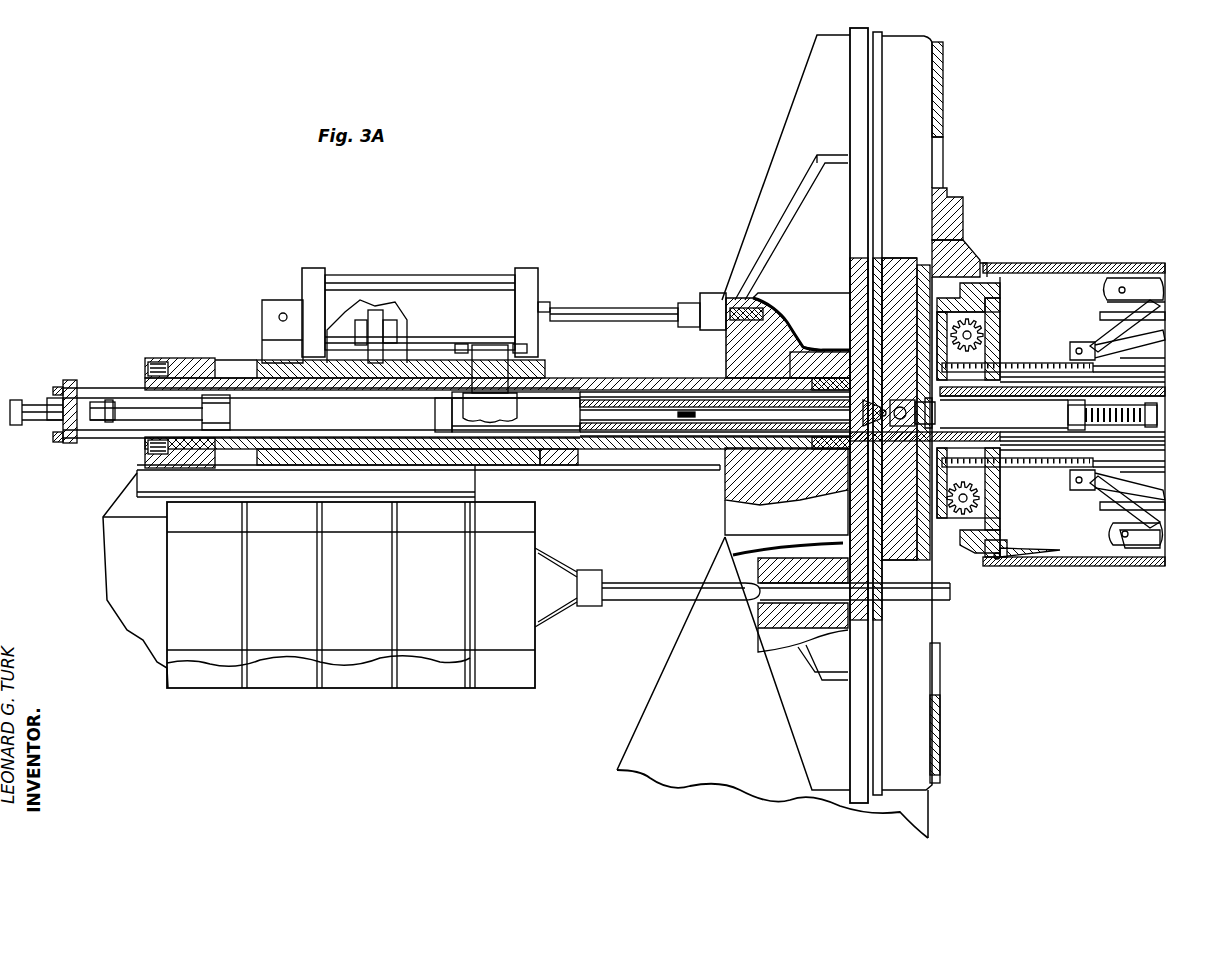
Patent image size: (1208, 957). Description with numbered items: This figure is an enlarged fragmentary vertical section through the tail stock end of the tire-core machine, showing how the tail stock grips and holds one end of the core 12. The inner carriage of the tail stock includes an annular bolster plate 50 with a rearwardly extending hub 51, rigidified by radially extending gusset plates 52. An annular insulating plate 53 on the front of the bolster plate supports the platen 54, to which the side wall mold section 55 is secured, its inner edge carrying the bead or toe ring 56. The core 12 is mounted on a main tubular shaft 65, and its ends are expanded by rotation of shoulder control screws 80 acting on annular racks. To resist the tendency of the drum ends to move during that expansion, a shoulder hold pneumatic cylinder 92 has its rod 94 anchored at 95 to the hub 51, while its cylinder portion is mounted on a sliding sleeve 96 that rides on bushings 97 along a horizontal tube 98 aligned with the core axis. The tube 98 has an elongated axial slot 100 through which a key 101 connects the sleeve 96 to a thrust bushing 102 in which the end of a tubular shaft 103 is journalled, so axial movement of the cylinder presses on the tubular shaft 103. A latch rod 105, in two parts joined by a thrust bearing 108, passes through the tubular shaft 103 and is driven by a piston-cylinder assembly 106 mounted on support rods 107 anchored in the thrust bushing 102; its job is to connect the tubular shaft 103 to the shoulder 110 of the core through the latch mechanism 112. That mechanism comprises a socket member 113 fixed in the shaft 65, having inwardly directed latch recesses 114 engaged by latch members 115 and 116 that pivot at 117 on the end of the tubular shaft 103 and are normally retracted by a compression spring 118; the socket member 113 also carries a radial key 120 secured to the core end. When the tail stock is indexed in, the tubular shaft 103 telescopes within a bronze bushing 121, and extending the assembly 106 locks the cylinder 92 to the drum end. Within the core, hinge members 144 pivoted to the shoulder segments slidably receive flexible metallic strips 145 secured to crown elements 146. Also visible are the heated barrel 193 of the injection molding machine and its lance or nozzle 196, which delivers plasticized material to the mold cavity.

The core 12 is at (1082, 570).
The bolster plate 50 is at (858, 92).
The hub 51 is at (733, 348).
The gusset plates 52 is at (792, 133).
The insulating plate 53 is at (880, 97).
The platen 54 is at (918, 126).
The side wall mold section 55 is at (963, 203).
The bead or toe ring 56 is at (972, 258).
The main tubular shaft 65 is at (1030, 363).
The shoulder control screws 80 is at (1033, 468).
The shoulder hold pneumatic cylinder 92 is at (455, 274).
The rod 94 is at (608, 306).
The anchor 95 is at (712, 292).
The sliding sleeve 96 is at (533, 457).
The bushings 97 is at (577, 450).
The tube 98 is at (647, 450).
The elongated axial slot 100 is at (600, 385).
The key 101 is at (492, 362).
The thrust bushing 102 is at (588, 383).
The tubular shaft 103 is at (775, 425).
The latch rod 105 is at (750, 413).
The piston-cylinder assembly 106 is at (33, 400).
The support rods 107 is at (110, 388).
The thrust bearing 108 is at (222, 395).
The shoulder 110 is at (926, 499).
The latch mechanism 112 is at (841, 345).
The socket member 113 is at (986, 399).
The latch recesses 114 is at (892, 449).
The latch member 115 is at (798, 432).
The latch member 116 is at (884, 398).
The pivot 117 is at (917, 395).
The compression spring 118 is at (921, 392).
The key 120 is at (980, 440).
The bronze bushing 121 is at (817, 363).
The hinge member 144 is at (1026, 558).
The flexible metallic strip 145 is at (1100, 550).
The crown element 146 is at (1155, 548).
The heated barrel 193 is at (522, 642).
The lance or nozzle 196 is at (647, 600).